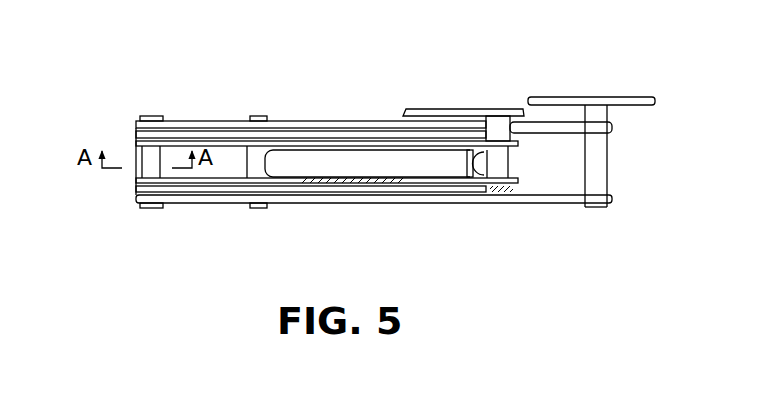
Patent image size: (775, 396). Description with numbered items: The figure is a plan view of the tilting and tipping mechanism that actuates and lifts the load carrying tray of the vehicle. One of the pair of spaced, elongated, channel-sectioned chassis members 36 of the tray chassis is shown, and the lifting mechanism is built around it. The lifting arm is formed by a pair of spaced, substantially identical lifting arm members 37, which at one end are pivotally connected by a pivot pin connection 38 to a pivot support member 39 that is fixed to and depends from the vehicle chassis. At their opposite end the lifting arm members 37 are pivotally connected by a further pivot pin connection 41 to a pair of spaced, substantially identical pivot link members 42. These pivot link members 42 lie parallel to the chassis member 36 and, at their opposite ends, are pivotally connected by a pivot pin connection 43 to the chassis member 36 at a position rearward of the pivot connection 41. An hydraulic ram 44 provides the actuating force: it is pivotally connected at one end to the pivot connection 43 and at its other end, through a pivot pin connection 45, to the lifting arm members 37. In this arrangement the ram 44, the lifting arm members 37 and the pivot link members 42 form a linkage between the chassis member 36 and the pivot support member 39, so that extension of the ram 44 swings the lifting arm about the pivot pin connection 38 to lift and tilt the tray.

The chassis member 36 is at (420, 107).
The lifting arm member 37 is at (338, 120).
The pivot pin connection 38 is at (615, 167).
The pivot support member 39 is at (590, 96).
The pivot pin connection 41 is at (132, 177).
The pivot link member 42 is at (218, 132).
The pivot pin connection 43 is at (495, 99).
The hydraulic ram 44 is at (407, 165).
The pivot pin connection 45 is at (267, 111).